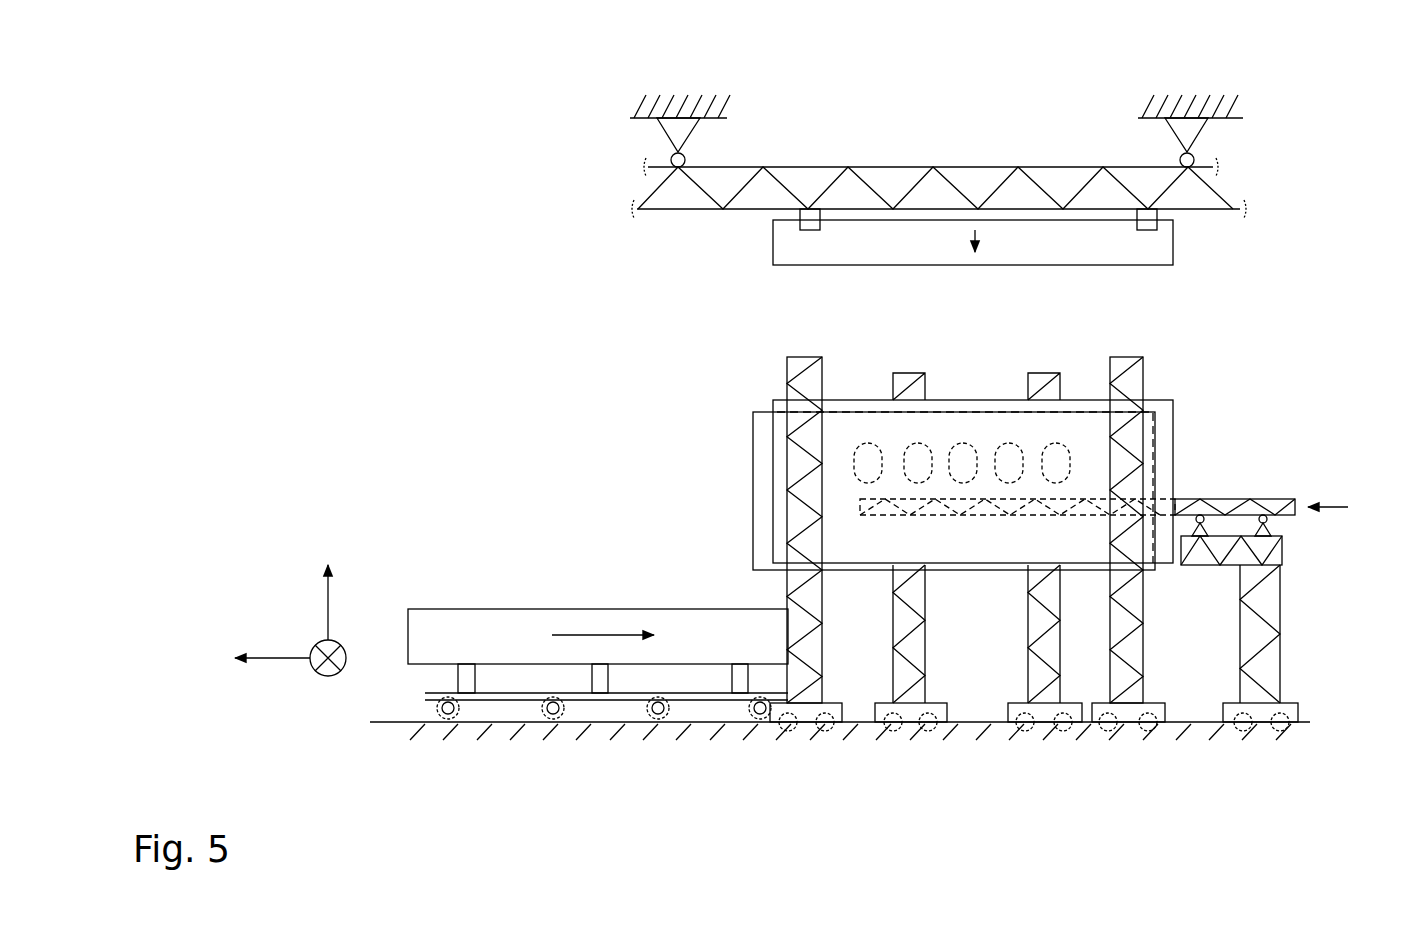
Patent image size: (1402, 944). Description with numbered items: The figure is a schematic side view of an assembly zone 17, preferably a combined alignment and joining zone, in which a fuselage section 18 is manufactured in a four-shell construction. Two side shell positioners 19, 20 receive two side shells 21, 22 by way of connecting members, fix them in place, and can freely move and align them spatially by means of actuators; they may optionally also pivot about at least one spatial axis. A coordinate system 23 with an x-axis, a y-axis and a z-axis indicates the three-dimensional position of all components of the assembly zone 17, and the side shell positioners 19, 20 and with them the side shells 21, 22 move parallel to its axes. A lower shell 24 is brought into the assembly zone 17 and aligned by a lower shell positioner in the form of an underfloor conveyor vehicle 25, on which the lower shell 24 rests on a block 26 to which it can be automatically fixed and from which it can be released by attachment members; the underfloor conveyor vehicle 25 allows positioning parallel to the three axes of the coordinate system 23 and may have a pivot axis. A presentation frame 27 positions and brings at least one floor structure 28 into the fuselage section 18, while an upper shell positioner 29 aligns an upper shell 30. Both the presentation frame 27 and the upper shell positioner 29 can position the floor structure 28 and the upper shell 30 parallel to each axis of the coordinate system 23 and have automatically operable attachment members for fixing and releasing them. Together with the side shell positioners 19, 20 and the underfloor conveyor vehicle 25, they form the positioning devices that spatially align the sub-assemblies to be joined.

The assembly zone 17 is at (560, 126).
The fuselage section 18 is at (522, 468).
The side shell positioner 19 is at (824, 645).
The side shell positioner 20 is at (1026, 645).
The side shell 21 is at (751, 436).
The side shell 22 is at (1176, 408).
The coordinate system 23 is at (330, 680).
The lower shell 24 is at (455, 620).
The underfloor conveyor vehicle 25 is at (672, 702).
The block 26 is at (478, 680).
The presentation frame 27 is at (1284, 553).
The floor structure 28 is at (1183, 497).
The upper shell positioner 29 is at (980, 165).
The upper shell 30 is at (1175, 243).